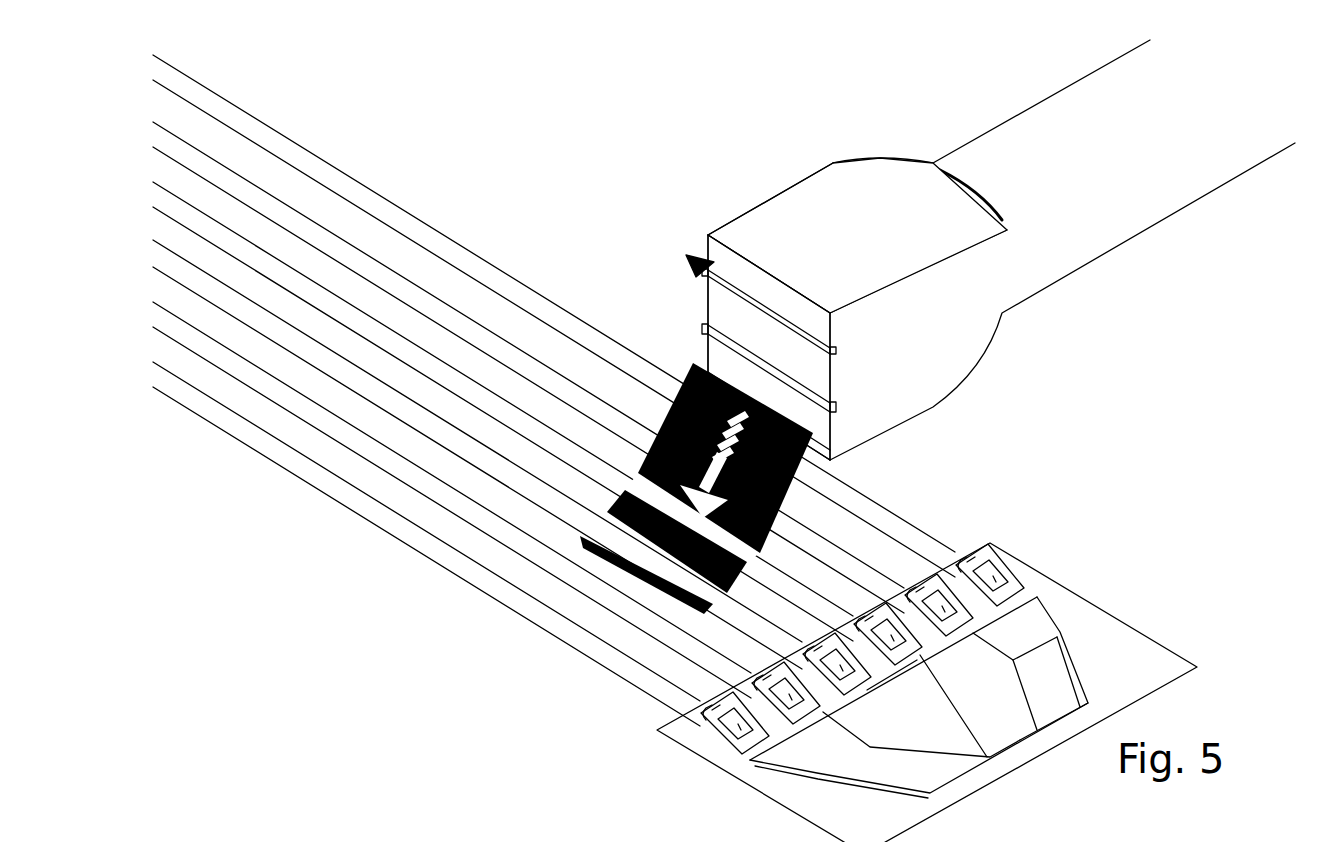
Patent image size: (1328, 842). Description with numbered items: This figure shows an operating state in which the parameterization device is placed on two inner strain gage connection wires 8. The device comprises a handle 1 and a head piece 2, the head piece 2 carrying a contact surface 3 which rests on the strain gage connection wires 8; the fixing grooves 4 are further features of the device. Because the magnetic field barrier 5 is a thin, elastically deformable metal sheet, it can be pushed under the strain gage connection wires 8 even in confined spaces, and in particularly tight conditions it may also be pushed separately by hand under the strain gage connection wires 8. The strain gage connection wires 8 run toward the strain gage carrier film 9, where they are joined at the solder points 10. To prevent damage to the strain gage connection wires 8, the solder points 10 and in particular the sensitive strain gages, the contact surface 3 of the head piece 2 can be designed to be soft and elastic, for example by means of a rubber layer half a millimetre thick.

The handle 1 is at (1067, 228).
The head piece 2 is at (830, 215).
The contact surface 3 is at (690, 265).
The fixing grooves 4 is at (833, 357).
The magnetic field barrier 5 is at (687, 360).
The strain gage connection wires 8 is at (467, 385).
The strain gage carrier film 9 is at (1105, 640).
The solder points 10 is at (987, 547).